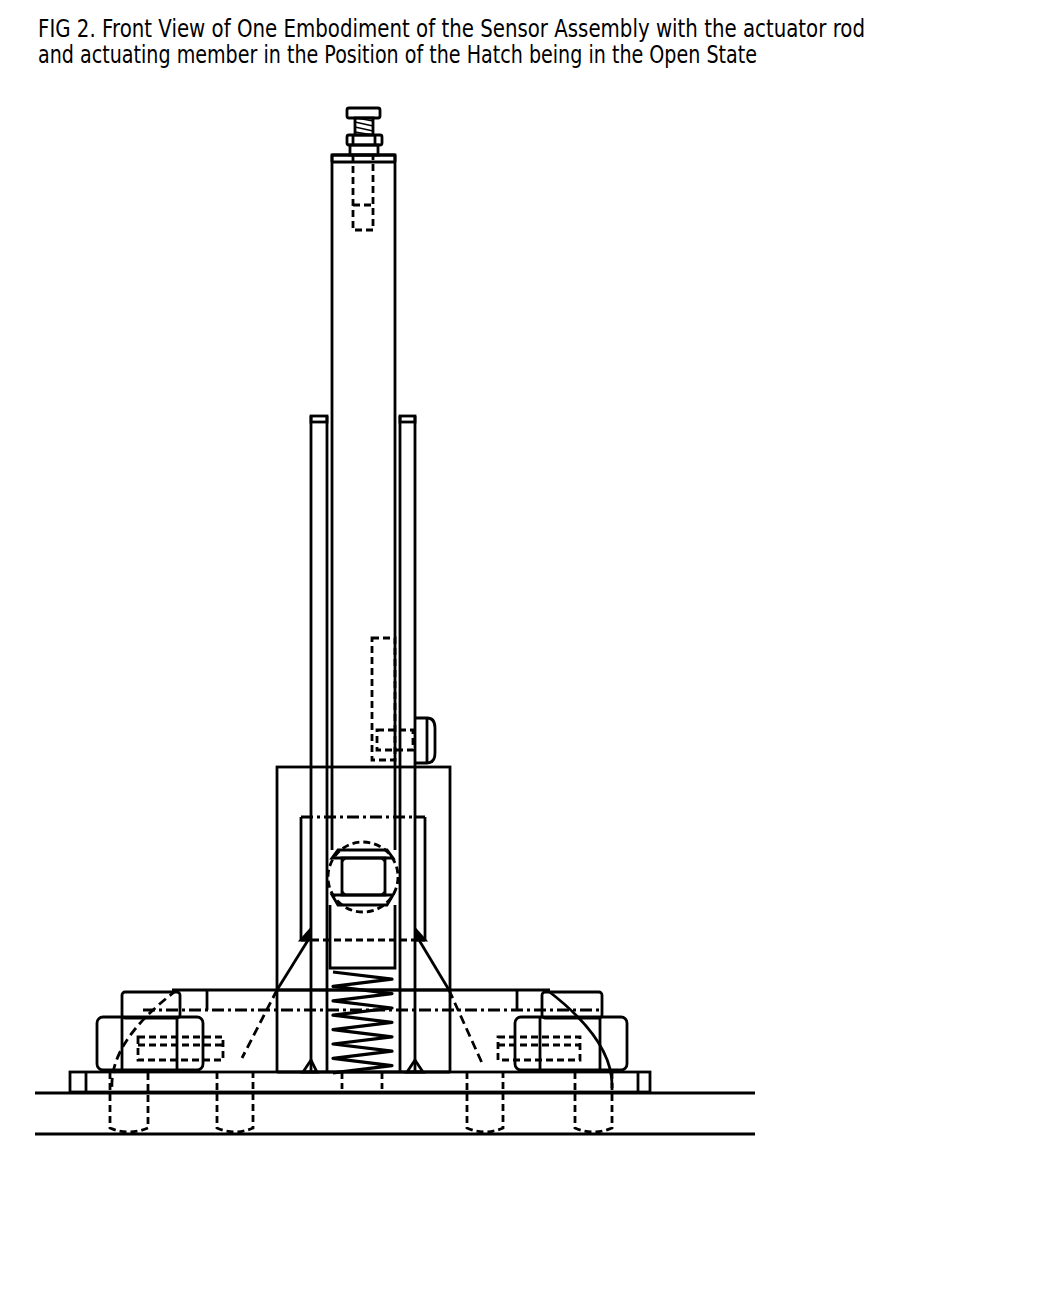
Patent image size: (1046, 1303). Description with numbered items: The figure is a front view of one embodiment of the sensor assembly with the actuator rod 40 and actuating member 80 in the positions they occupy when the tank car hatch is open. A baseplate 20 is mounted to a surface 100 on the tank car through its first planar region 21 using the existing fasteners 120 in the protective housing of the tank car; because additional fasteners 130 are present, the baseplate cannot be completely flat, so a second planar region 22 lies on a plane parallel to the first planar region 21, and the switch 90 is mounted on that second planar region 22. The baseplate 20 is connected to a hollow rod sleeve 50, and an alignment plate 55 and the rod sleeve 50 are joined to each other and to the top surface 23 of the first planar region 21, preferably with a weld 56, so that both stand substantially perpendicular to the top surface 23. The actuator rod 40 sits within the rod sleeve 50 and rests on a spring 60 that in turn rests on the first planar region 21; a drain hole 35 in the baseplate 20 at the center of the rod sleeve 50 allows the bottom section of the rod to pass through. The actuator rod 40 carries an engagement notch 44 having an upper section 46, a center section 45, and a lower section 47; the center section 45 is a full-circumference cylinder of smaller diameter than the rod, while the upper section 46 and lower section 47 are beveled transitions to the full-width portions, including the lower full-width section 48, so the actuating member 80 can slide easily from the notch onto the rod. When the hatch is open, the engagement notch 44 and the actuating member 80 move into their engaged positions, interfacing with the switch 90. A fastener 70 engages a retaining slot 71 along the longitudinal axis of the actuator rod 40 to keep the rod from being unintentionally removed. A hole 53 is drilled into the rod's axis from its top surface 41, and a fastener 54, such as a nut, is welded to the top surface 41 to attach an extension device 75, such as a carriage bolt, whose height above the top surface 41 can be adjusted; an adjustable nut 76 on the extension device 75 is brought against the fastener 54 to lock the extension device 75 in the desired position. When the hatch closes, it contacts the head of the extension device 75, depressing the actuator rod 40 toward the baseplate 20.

The baseplate 20 is at (622, 1085).
The first planar region 21 is at (300, 1082).
The second planar region 22 is at (473, 995).
The top surface 23 is at (443, 1077).
The drain hole 35 is at (362, 1083).
The actuator rod 40 is at (370, 316).
The top surface 41 is at (342, 156).
The engagement notch 44 is at (337, 876).
The center section 45 is at (368, 878).
The upper section 46 is at (368, 855).
The lower section 47 is at (368, 898).
The lower full-width section 48 is at (363, 930).
The rod sleeve 50 is at (407, 490).
The hole 53 is at (363, 215).
The fastener 54 is at (367, 150).
The alignment plate 55 is at (275, 992).
The weld 56 is at (307, 1065).
The spring 60 is at (363, 1027).
The fastener 70 is at (432, 738).
The retaining slot 71 is at (375, 690).
The extension device 75 is at (362, 113).
The adjustable nut 76 is at (382, 140).
The actuating member 80 is at (353, 850).
The switch 90 is at (292, 788).
The surface 100 is at (702, 1093).
The existing fasteners 120 is at (610, 1030).
The additional fasteners 130 is at (535, 1110).